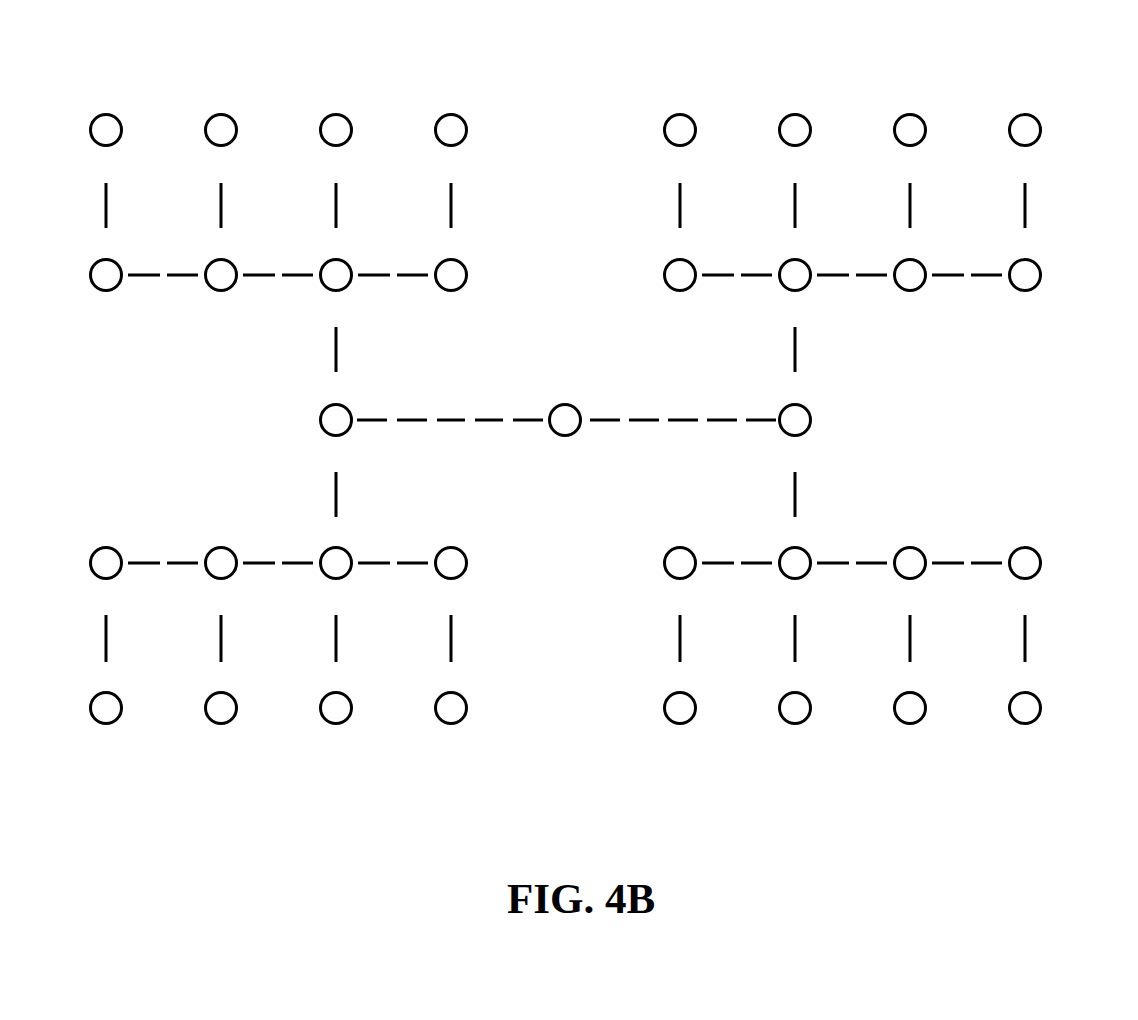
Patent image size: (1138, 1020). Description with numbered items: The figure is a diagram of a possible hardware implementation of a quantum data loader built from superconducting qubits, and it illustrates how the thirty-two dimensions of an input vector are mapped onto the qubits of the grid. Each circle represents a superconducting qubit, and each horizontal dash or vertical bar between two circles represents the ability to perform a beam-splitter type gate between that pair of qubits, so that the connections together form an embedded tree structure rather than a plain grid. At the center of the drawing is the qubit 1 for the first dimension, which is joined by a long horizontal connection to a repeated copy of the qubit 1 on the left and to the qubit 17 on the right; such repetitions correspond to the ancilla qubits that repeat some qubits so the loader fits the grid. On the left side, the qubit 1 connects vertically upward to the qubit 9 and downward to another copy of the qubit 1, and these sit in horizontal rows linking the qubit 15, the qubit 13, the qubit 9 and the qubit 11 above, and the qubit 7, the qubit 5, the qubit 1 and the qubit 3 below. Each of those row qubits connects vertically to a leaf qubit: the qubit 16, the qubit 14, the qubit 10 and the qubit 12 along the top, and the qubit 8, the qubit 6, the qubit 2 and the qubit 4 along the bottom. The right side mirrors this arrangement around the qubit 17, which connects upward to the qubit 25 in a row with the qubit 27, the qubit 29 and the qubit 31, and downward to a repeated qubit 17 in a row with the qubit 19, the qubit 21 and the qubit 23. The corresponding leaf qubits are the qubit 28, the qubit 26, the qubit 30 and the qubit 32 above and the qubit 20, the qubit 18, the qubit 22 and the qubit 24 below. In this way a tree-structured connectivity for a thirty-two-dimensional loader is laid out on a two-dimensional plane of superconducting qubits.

The qubit for dimension one 1 is at (412, 482).
The qubit for dimension two 2 is at (335, 753).
The qubit for dimension three 3 is at (450, 519).
The qubit for dimension four 4 is at (450, 753).
The qubit for dimension five 5 is at (220, 519).
The qubit for dimension six 6 is at (220, 753).
The qubit for dimension seven 7 is at (105, 519).
The qubit for dimension eight 8 is at (105, 753).
The qubit for dimension nine 9 is at (356, 320).
The qubit for dimension ten 10 is at (355, 86).
The qubit for dimension eleven 11 is at (470, 320).
The qubit for dimension twelve 12 is at (470, 86).
The qubit for dimension thirteen 13 is at (240, 320).
The qubit for dimension fourteen 14 is at (240, 86).
The qubit for dimension fifteen 15 is at (125, 320).
The qubit for dimension sixteen 16 is at (125, 86).
The qubit for dimension seventeen 17 is at (855, 482).
The qubit for dimension eighteen 18 is at (775, 753).
The qubit for dimension nineteen 19 is at (699, 519).
The qubit for dimension twenty 20 is at (659, 753).
The qubit for dimension twenty-one 21 is at (950, 519).
The qubit for dimension twenty-two 22 is at (890, 753).
The qubit for dimension twenty-three 23 is at (1065, 519).
The qubit for dimension twenty-four 24 is at (1005, 753).
The qubit for dimension twenty-five 25 is at (835, 320).
The qubit for dimension twenty-six 26 is at (814, 86).
The qubit for dimension twenty-seven 27 is at (699, 320).
The qubit for dimension twenty-eight 28 is at (699, 86).
The qubit for dimension twenty-nine 29 is at (950, 320).
The qubit for dimension thirty 30 is at (929, 86).
The qubit for dimension thirty-one 31 is at (1065, 320).
The qubit for dimension thirty-two 32 is at (1044, 86).